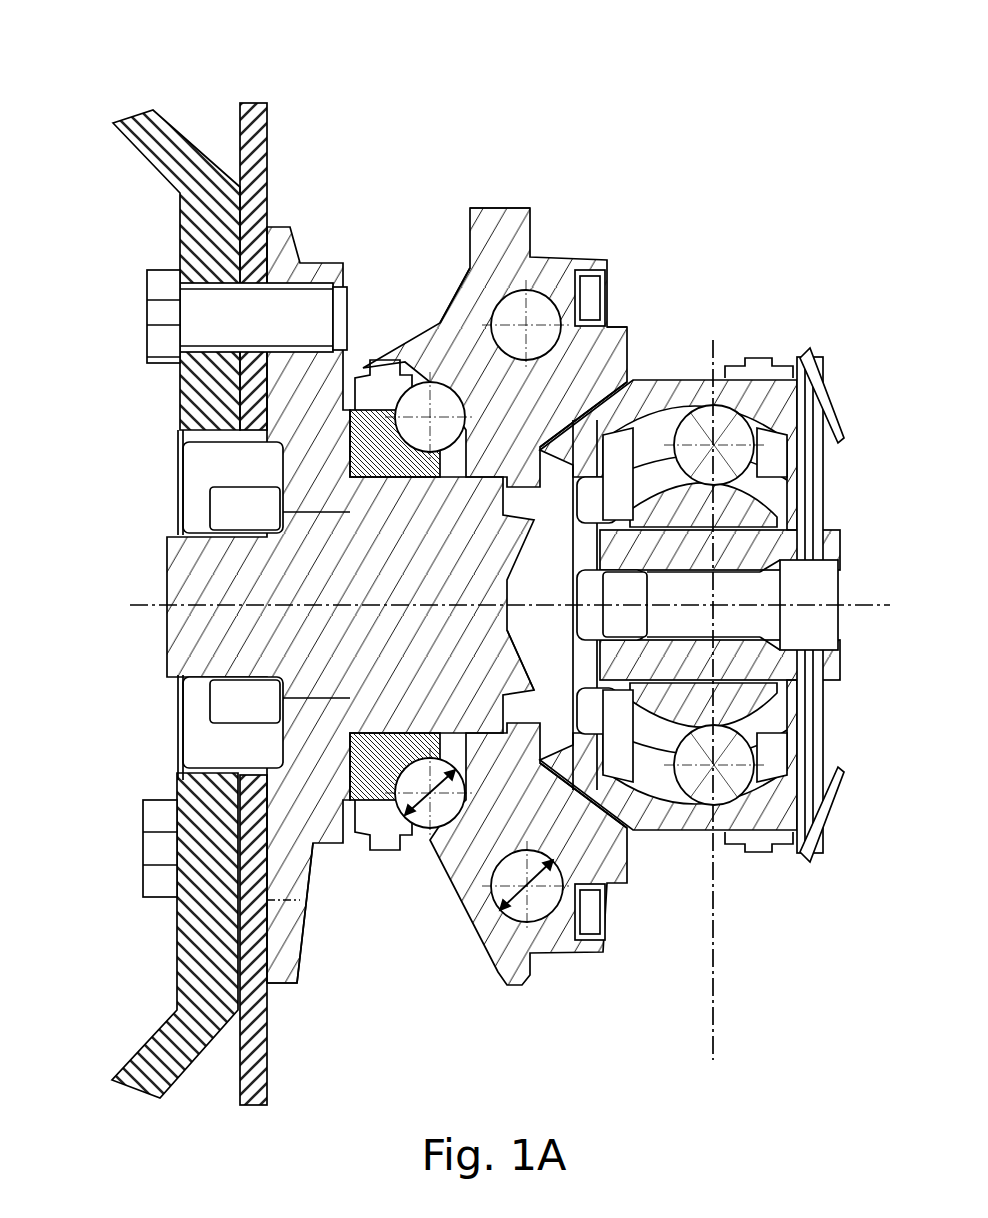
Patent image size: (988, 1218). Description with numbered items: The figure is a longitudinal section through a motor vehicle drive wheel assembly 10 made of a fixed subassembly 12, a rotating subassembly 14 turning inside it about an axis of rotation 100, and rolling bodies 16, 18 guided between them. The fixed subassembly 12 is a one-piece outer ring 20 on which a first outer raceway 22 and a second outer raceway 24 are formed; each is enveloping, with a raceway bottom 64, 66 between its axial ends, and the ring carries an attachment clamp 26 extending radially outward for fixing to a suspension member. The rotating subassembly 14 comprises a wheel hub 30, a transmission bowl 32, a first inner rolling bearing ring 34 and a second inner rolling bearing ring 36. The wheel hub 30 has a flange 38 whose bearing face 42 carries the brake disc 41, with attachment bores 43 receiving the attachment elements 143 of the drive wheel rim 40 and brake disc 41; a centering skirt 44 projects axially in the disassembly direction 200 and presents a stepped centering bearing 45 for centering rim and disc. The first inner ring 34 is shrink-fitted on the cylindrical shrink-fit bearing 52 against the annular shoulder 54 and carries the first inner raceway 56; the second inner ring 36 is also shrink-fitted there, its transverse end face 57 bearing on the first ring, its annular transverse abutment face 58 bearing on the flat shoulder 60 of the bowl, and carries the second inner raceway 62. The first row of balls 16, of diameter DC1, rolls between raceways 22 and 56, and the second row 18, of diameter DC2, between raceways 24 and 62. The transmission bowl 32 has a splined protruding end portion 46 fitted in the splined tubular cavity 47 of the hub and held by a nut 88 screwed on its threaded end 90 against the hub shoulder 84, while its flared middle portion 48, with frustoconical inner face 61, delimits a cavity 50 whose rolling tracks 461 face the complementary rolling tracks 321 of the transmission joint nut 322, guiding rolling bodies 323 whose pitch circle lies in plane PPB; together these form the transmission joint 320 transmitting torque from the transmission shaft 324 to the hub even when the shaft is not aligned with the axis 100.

The motor vehicle drive wheel assembly 10 is at (622, 95).
The fixed subassembly 12 is at (655, 262).
The rotating subassembly 14 is at (732, 553).
The first row of rolling bodies 16 is at (420, 400).
The second row of rolling bodies 18 is at (538, 300).
The outer ring 20 is at (493, 280).
The first outer raceway 22 is at (427, 825).
The second outer raceway 24 is at (535, 925).
The attachment clamp 26 is at (517, 213).
The wheel hub 30 is at (300, 400).
The transmission bowl 32 is at (773, 390).
The first inner rolling bearing ring 34 is at (370, 373).
The second inner rolling bearing ring 36 is at (612, 335).
The flange 38 is at (287, 973).
The drive wheel rim 40 is at (142, 125).
The brake disc 41 is at (250, 125).
The bearing face 42 is at (267, 967).
The attachment bores 43 is at (287, 300).
The centering skirt 44 is at (217, 757).
The centering bearing 45 is at (215, 445).
The protruding end portion 46 is at (318, 390).
The splined tubular cavity 47 is at (275, 700).
The flared middle portion 48 is at (732, 818).
The cavity 50 is at (547, 563).
The cylindrical shrink-fit bearing 52 is at (605, 895).
The annular shoulder 54 is at (345, 752).
The first inner raceway 56 is at (380, 440).
The transverse end face 57 is at (413, 740).
The annular transverse abutment face 58 is at (590, 392).
The shoulder 60 is at (575, 735).
The frustoconical inner face 61 is at (537, 673).
The second inner raceway 62 is at (603, 340).
The raceway bottom 64 is at (432, 395).
The raceway bottom 66 is at (517, 287).
The shoulder 84 is at (273, 493).
The nut 88 is at (223, 507).
The threaded end 90 is at (178, 522).
The axis of rotation 100 is at (878, 604).
The attachment elements 143 is at (163, 277).
The direction of disassembly 200 is at (15, 605).
The transmission joint 320 is at (795, 312).
The complementary rolling tracks 321 is at (780, 483).
The transmission joint nut 322 is at (740, 697).
The rolling bodies 323 is at (733, 778).
The transmission shaft 324 is at (838, 683).
The rolling tracks 461 is at (780, 412).
The diameter of the balls of the first row DC1 is at (382, 797).
The diameter of the balls of the second row DC2 is at (605, 935).
The plane of the pitch circle PPB is at (711, 1053).